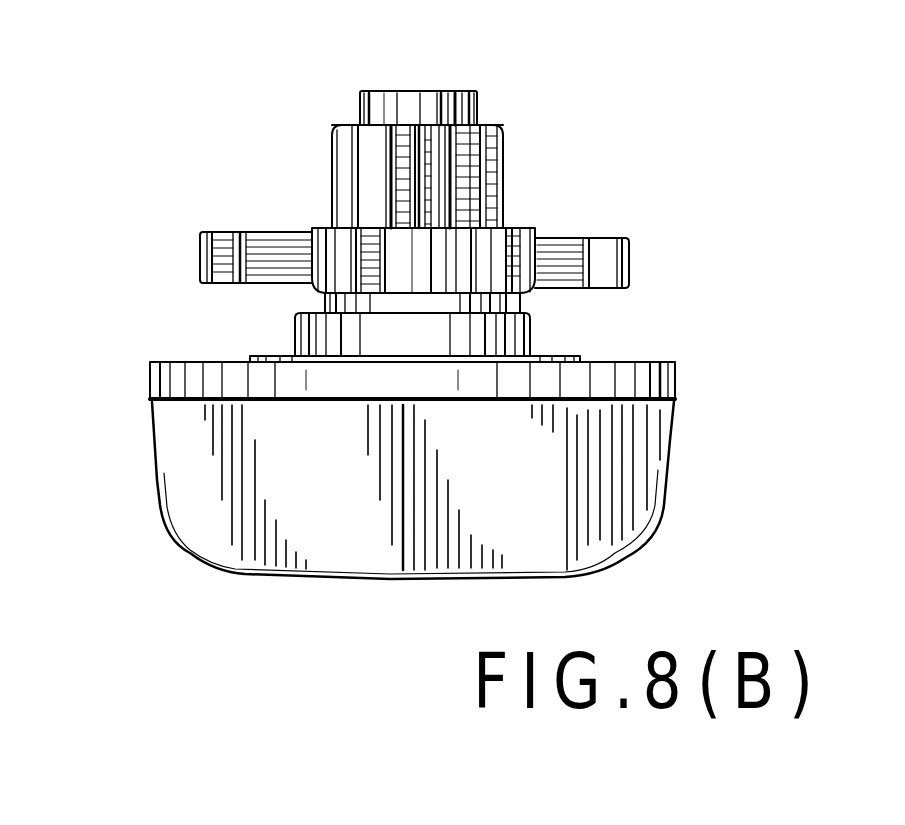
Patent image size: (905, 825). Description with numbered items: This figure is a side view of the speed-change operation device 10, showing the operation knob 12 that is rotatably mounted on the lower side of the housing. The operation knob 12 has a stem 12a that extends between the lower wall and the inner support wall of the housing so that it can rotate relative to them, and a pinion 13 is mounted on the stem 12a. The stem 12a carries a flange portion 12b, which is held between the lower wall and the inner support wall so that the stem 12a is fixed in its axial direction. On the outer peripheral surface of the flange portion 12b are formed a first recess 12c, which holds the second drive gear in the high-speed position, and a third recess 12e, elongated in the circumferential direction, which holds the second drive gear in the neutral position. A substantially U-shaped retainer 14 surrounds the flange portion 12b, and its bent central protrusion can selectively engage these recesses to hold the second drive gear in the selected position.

The speed-change operation device 10 is at (672, 293).
The operation knob 12 is at (630, 490).
The stem 12a is at (438, 100).
The flange portion 12b is at (496, 257).
The first recess 12c is at (535, 338).
The third recess 12e is at (272, 265).
The pinion 13 is at (478, 162).
The retainer 14 is at (632, 262).